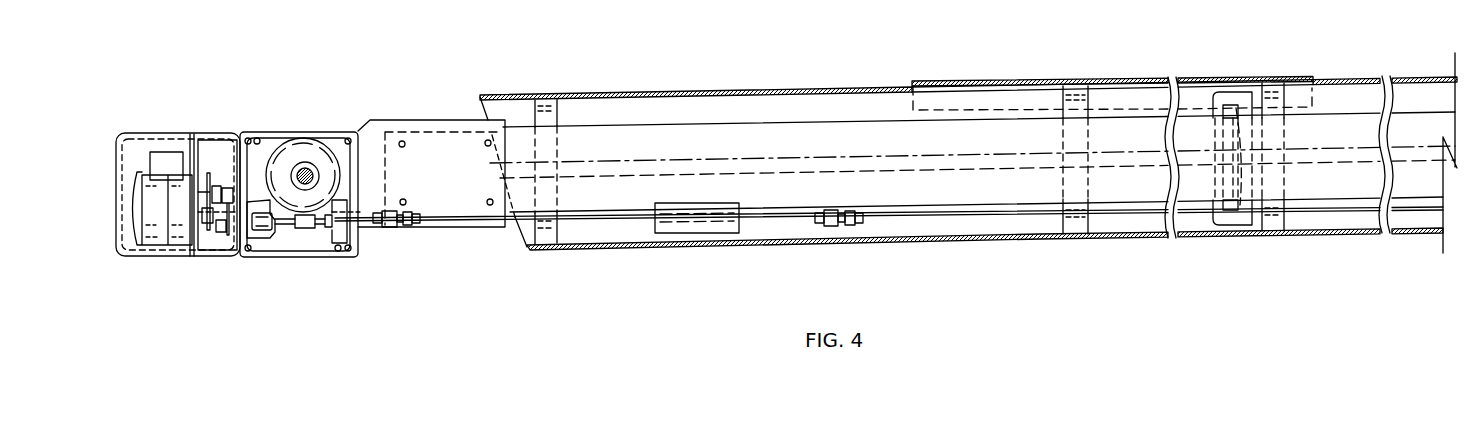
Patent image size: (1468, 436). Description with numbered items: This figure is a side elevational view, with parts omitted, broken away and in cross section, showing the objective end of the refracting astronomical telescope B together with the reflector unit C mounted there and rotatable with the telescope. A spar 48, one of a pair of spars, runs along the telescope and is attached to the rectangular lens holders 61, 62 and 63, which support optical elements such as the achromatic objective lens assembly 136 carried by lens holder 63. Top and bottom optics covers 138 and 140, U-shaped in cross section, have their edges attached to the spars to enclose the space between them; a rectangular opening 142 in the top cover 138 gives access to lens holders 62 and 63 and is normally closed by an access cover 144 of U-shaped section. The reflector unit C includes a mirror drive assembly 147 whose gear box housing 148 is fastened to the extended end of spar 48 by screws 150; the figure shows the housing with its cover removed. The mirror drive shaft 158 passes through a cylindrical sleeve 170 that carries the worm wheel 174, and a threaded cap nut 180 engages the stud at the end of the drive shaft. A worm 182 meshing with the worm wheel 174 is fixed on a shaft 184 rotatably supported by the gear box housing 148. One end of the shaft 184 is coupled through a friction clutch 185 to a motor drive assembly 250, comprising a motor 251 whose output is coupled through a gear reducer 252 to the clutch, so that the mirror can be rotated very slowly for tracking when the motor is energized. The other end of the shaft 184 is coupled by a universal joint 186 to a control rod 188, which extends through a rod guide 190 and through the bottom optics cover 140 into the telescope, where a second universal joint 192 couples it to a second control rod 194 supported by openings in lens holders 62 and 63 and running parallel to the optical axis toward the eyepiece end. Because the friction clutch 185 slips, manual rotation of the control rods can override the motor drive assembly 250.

The spar 48 is at (856, 152).
The lens holder 61 is at (553, 122).
The lens holder 62 is at (1063, 105).
The lens holder 63 is at (1272, 88).
The achromatic objective lens assembly 136 is at (1210, 100).
The top optics cover 138 is at (718, 94).
The bottom optics cover 140 is at (843, 245).
The rectangular opening 142 is at (930, 92).
The access cover 144 is at (1112, 83).
The mirror drive assembly 147 is at (336, 285).
The gear box housing 148 is at (295, 131).
The screws 150 is at (486, 141).
The mirror drive shaft 158 is at (314, 174).
The cylindrical sleeve 170 is at (303, 160).
The worm wheel 174 is at (318, 150).
The threaded cap nut 180 is at (302, 9).
The worm 182 is at (305, 231).
The shaft 184 is at (325, 236).
The friction clutch 185 is at (262, 231).
The universal joint 186 is at (405, 237).
The control rod 188 is at (615, 221).
The rod guide 190 is at (690, 231).
The second universal joint 192 is at (845, 206).
The second control rod 194 is at (1140, 224).
The motor drive assembly 250 is at (200, 266).
The motor 251 is at (162, 243).
The gear reducer 252 is at (213, 165).
The refracting astronomical telescope B is at (876, 77).
The reflector unit C is at (247, 108).